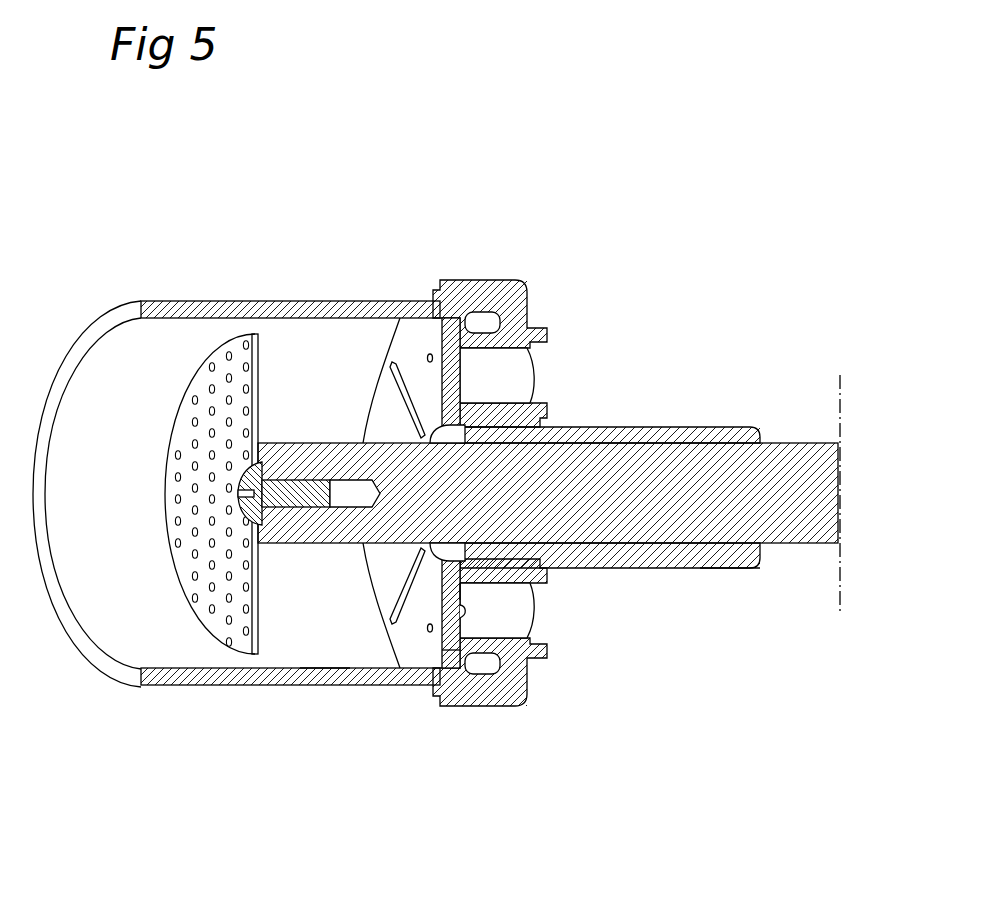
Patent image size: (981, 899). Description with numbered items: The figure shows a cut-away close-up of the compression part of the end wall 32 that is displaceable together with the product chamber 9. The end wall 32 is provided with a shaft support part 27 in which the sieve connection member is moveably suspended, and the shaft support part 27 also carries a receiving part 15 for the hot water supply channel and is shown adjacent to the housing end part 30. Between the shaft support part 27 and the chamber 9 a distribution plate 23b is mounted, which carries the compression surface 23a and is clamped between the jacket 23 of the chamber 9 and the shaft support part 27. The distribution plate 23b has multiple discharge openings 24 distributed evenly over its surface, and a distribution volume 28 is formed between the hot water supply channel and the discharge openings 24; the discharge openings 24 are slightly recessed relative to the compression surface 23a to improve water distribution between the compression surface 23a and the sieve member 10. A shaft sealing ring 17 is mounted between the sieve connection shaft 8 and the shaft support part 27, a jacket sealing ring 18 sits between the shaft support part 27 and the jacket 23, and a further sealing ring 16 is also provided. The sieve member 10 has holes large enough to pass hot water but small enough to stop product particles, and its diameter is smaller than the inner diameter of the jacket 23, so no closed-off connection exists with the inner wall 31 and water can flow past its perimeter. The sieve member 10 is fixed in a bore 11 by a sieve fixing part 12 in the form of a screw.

The sieve connection shaft 8 is at (786, 457).
The product chamber 9 is at (133, 620).
The sieve member 10 is at (210, 618).
The bore 11 is at (357, 490).
The sieve fixing part 12 is at (300, 485).
The receiving part for hot water supply channel 15 is at (506, 368).
The sealing ring 16 is at (461, 612).
The shaft sealing ring 17 is at (452, 590).
The jacket sealing ring 18 is at (488, 667).
The jacket 23 is at (180, 301).
The displaceable compression surface 23a is at (432, 372).
The distribution plate 23b is at (455, 660).
The discharge opening 24 is at (441, 350).
The shaft support part 27 is at (738, 568).
The distribution volume 28 is at (452, 660).
The housing end part 30 is at (672, 412).
The inner wall 31 is at (325, 638).
The end wall 32 is at (480, 345).